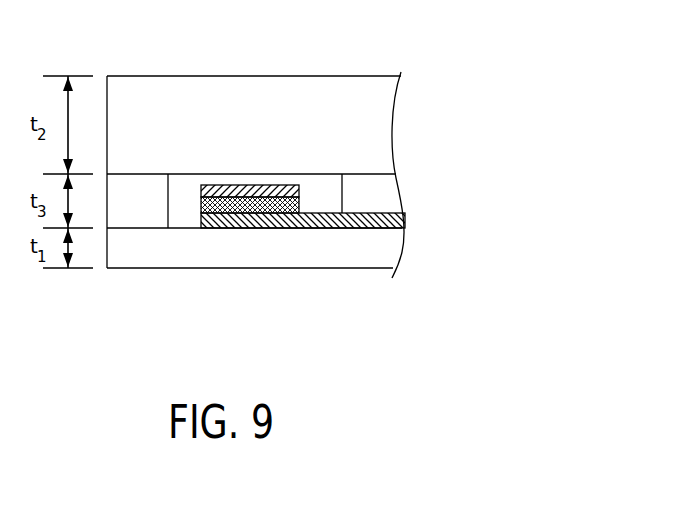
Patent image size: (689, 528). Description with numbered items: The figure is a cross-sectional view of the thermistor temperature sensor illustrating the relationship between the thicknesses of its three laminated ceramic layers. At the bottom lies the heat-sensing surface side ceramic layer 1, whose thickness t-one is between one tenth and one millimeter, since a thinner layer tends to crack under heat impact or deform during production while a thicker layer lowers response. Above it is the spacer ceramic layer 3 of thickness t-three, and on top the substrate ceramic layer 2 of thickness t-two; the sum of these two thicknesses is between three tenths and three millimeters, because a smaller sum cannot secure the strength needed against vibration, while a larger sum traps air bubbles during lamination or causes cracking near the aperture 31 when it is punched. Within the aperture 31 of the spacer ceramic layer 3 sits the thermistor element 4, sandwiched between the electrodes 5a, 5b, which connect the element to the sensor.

The heat-sensing surface side ceramic layer 1 is at (141, 270).
The substrate ceramic layer 2 is at (329, 76).
The spacer ceramic layer 3 is at (130, 174).
The aperture 31 is at (177, 222).
The thermistor element 4 is at (300, 203).
The electrode 5a is at (257, 228).
The electrode 5b is at (244, 185).